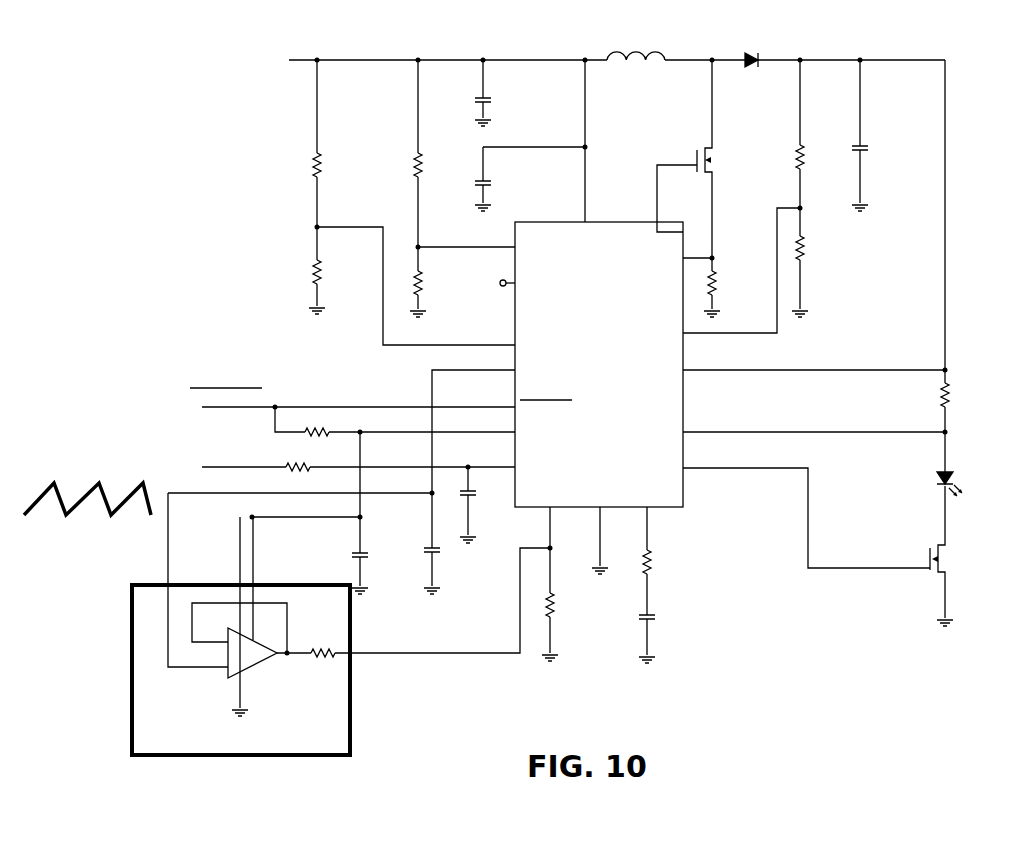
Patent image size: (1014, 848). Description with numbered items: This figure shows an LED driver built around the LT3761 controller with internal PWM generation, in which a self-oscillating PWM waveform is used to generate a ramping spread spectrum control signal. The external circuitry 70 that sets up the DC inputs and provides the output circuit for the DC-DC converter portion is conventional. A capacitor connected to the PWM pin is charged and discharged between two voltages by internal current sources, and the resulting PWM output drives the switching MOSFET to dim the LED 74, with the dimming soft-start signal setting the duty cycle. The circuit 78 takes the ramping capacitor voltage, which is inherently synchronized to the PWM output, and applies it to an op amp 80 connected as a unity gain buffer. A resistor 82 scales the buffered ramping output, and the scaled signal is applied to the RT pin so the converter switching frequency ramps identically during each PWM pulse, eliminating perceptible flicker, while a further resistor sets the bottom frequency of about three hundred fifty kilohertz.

The external circuitry 70 is at (257, 139).
The LED 74 is at (942, 474).
The circuit 78 is at (352, 712).
The op amp 80 is at (263, 665).
The resistor 82 is at (321, 645).